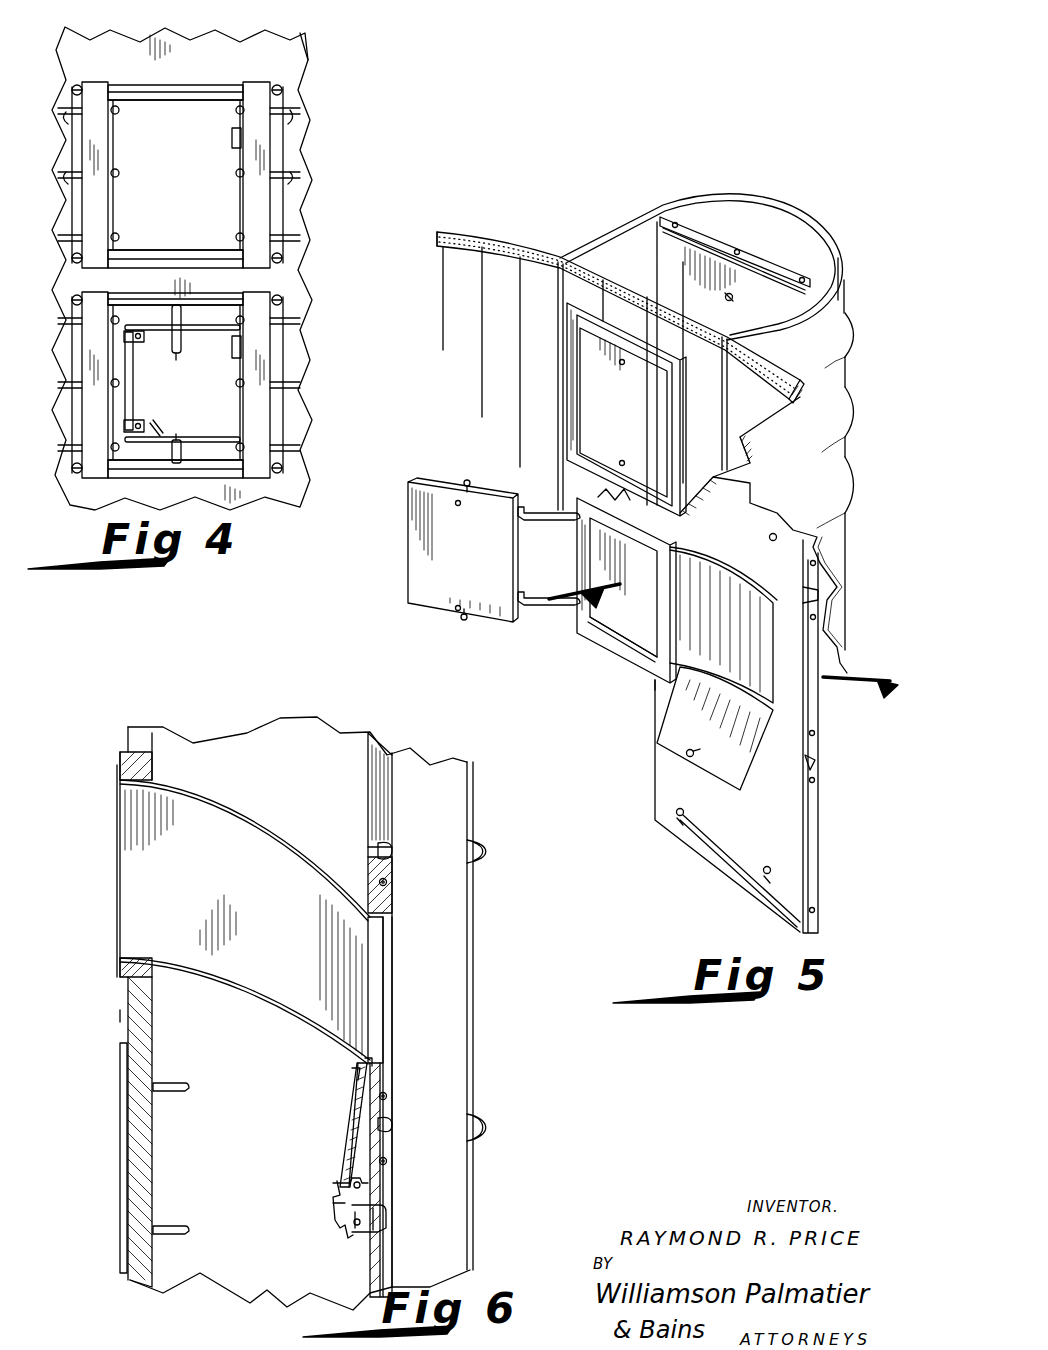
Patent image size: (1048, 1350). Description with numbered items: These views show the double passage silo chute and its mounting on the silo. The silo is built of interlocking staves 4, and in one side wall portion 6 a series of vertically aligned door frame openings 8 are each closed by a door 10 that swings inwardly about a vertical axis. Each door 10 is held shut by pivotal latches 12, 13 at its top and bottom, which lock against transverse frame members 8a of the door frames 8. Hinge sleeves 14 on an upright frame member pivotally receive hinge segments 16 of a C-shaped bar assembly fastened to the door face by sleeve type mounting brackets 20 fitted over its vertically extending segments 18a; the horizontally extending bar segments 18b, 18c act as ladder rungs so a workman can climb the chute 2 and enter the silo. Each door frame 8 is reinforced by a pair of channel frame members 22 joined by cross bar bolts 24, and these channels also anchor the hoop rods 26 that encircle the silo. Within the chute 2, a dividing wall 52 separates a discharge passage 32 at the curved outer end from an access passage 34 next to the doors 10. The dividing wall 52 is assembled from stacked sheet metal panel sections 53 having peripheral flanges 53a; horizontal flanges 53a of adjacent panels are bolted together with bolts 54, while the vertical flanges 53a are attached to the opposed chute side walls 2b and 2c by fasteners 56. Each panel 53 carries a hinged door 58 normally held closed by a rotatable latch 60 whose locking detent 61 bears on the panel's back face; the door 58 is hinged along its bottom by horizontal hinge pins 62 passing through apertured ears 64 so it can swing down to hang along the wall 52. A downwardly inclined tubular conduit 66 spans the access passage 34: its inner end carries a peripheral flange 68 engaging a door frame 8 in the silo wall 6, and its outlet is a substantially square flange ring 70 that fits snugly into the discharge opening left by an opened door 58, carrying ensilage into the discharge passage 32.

In FIG. 5, the silo chute 2 is at (823, 208).
In FIG. 6, the silo chute 2 is at (483, 786).
In FIG. 5, the side wall of silo chute 2b is at (593, 240).
In FIG. 5, the side wall of silo chute 2c is at (770, 454).
In FIG. 5, the staves 4 is at (500, 233).
In FIG. 4, the silo side wall portion 6 is at (262, 64).
In FIG. 5, the silo side wall portion 6 is at (715, 628).
In FIG. 6, the silo side wall portion 6 is at (118, 1016).
In FIG. 5, the door frame openings 8 is at (573, 338).
In FIG. 6, the door frame openings 8 is at (120, 753).
In FIG. 4, the transverse frame members 8a is at (195, 82).
In FIG. 5, the door 10 is at (605, 408).
In FIG. 4, the pivotal latch 12 is at (181, 346).
In FIG. 5, the pivotal latch 12 is at (468, 481).
In FIG. 4, the pivotal latch 13 is at (175, 466).
In FIG. 5, the pivotal latch 13 is at (463, 618).
In FIG. 4, the hinge sleeves 14 is at (232, 128).
In FIG. 4, the hinge segments 16 is at (234, 142).
In FIG. 4, the vertically extending segments 18a is at (133, 392).
In FIG. 4, the horizontally extending bar segment 18b is at (215, 436).
In FIG. 5, the horizontally extending bar segment 18b is at (541, 608).
In FIG. 6, the horizontally extending bar segment 18b is at (186, 1229).
In FIG. 4, the horizontally extending bar segment 18c is at (178, 354).
In FIG. 5, the horizontally extending bar segment 18c is at (521, 521).
In FIG. 6, the horizontally extending bar segment 18c is at (186, 1090).
In FIG. 4, the mounting brackets 20 is at (146, 340).
In FIG. 4, the channel frame members 22 is at (108, 201).
In FIG. 4, the cross bar bolts 24 is at (133, 84).
In FIG. 4, the hoop rods 26 is at (286, 109).
In FIG. 5, the discharge passage 32 is at (779, 212).
In FIG. 6, the discharge passage 32 is at (417, 1014).
In FIG. 5, the access passage 34 is at (623, 248).
In FIG. 6, the access passage 34 is at (264, 763).
In FIG. 5, the dividing wall 52 is at (655, 270).
In FIG. 6, the dividing wall 52 is at (362, 792).
In FIG. 5, the panel sections 53 is at (652, 228).
In FIG. 6, the panel sections 53 is at (368, 760).
In FIG. 5, the peripheral flanges 53a is at (716, 238).
In FIG. 6, the peripheral flanges 53a is at (392, 786).
In FIG. 6, the bolts 54 is at (384, 846).
In FIG. 6, the fasteners 56 is at (387, 883).
In FIG. 5, the hinged door 58 is at (758, 300).
In FIG. 6, the hinged door 58 is at (353, 1116).
In FIG. 5, the rotatable latch 60 is at (737, 290).
In FIG. 6, the rotatable latch 60 is at (372, 1181).
In FIG. 5, the locking detent 61 is at (687, 756).
In FIG. 6, the locking detent 61 is at (387, 1200).
In FIG. 5, the hinge pins 62 is at (680, 819).
In FIG. 6, the hinge pins 62 is at (380, 1065).
In FIG. 5, the apertured ears 64 is at (680, 812).
In FIG. 6, the apertured ears 64 is at (356, 1087).
In FIG. 5, the tubular conduit 66 is at (765, 668).
In FIG. 6, the tubular conduit 66 is at (242, 979).
In FIG. 5, the peripheral flange 68 is at (611, 641).
In FIG. 6, the peripheral flange 68 is at (117, 769).
In FIG. 6, the flange ring 70 is at (384, 933).